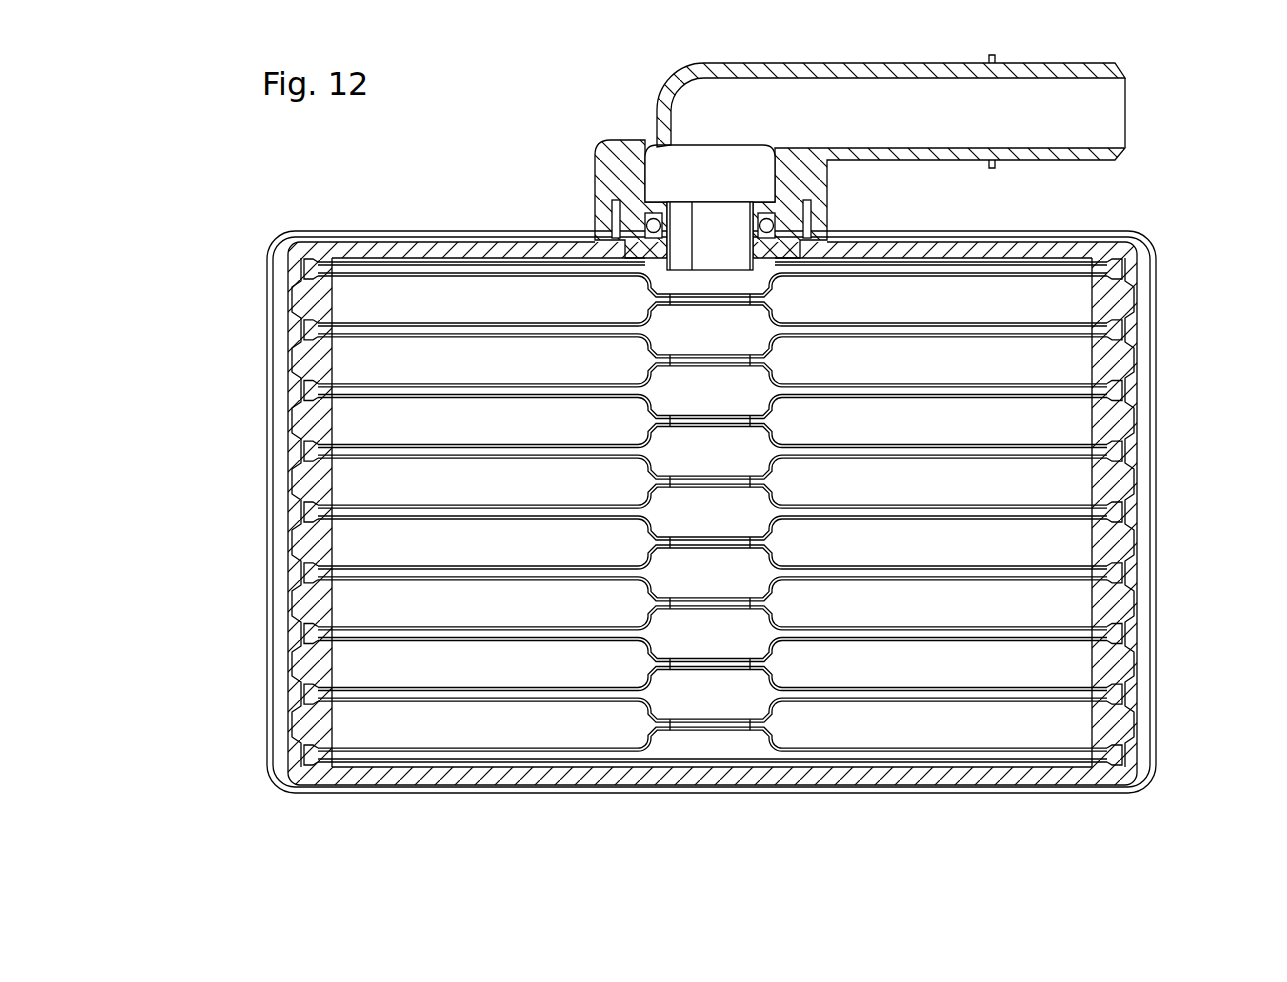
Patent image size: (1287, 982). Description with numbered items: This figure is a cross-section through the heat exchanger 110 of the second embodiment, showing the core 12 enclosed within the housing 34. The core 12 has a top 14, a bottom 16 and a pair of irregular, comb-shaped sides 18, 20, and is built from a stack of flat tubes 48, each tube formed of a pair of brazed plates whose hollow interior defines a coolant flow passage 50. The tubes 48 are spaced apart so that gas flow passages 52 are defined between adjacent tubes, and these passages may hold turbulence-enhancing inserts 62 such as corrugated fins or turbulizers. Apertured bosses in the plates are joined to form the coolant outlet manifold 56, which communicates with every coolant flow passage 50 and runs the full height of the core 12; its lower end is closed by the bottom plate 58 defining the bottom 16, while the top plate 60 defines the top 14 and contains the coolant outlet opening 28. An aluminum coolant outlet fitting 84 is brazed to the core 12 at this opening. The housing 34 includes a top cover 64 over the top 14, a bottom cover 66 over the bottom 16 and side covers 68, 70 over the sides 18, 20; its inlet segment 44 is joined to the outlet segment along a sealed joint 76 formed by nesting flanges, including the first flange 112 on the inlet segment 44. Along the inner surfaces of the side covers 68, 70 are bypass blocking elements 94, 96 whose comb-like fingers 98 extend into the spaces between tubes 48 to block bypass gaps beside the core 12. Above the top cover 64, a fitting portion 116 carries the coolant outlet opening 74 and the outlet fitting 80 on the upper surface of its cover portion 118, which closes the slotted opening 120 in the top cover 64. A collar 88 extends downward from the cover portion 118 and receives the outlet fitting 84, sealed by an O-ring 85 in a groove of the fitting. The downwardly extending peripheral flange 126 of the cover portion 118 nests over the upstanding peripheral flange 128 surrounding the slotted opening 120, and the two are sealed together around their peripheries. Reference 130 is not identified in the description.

The heat exchanger 110 is at (670, 480).
The first flange 112 is at (268, 350).
The core 12 is at (712, 475).
The top 14 is at (712, 257).
The bottom 16 is at (712, 806).
The side 18 is at (303, 490).
The side 20 is at (1158, 513).
The coolant outlet opening 28 is at (716, 290).
The housing 34 is at (712, 213).
The inlet segment 44 is at (712, 213).
The flat tubes 48 is at (1125, 608).
The coolant flow passage 50 is at (1047, 637).
The gas flow passages 52 is at (712, 481).
The coolant outlet manifold 56 is at (733, 652).
The bottom plate 58 is at (712, 806).
The top plate 60 is at (1068, 262).
The turbulence-enhancing inserts 62 is at (907, 494).
The top cover 64 is at (495, 248).
The bottom cover 66 is at (377, 793).
The side cover 68 is at (310, 574).
The side cover 70 is at (1126, 578).
The coolant outlet opening 74 is at (668, 192).
The sealed joint 76 is at (1140, 362).
The outlet fitting 80 is at (877, 90).
The coolant outlet fitting 84 is at (780, 262).
The O-ring 85 is at (760, 225).
The collar 88 is at (598, 189).
The bypass blocking element 94 is at (323, 415).
The bypass blocking element 96 is at (1166, 512).
The fingers 98 is at (715, 512).
The fitting portion 116 is at (660, 95).
The cover portion 118 is at (598, 153).
The slotted opening 120 is at (650, 278).
The downwardly extending peripheral flange 126 is at (575, 201).
The upstanding peripheral flange 128 is at (815, 205).
The slot 130 is at (597, 224).